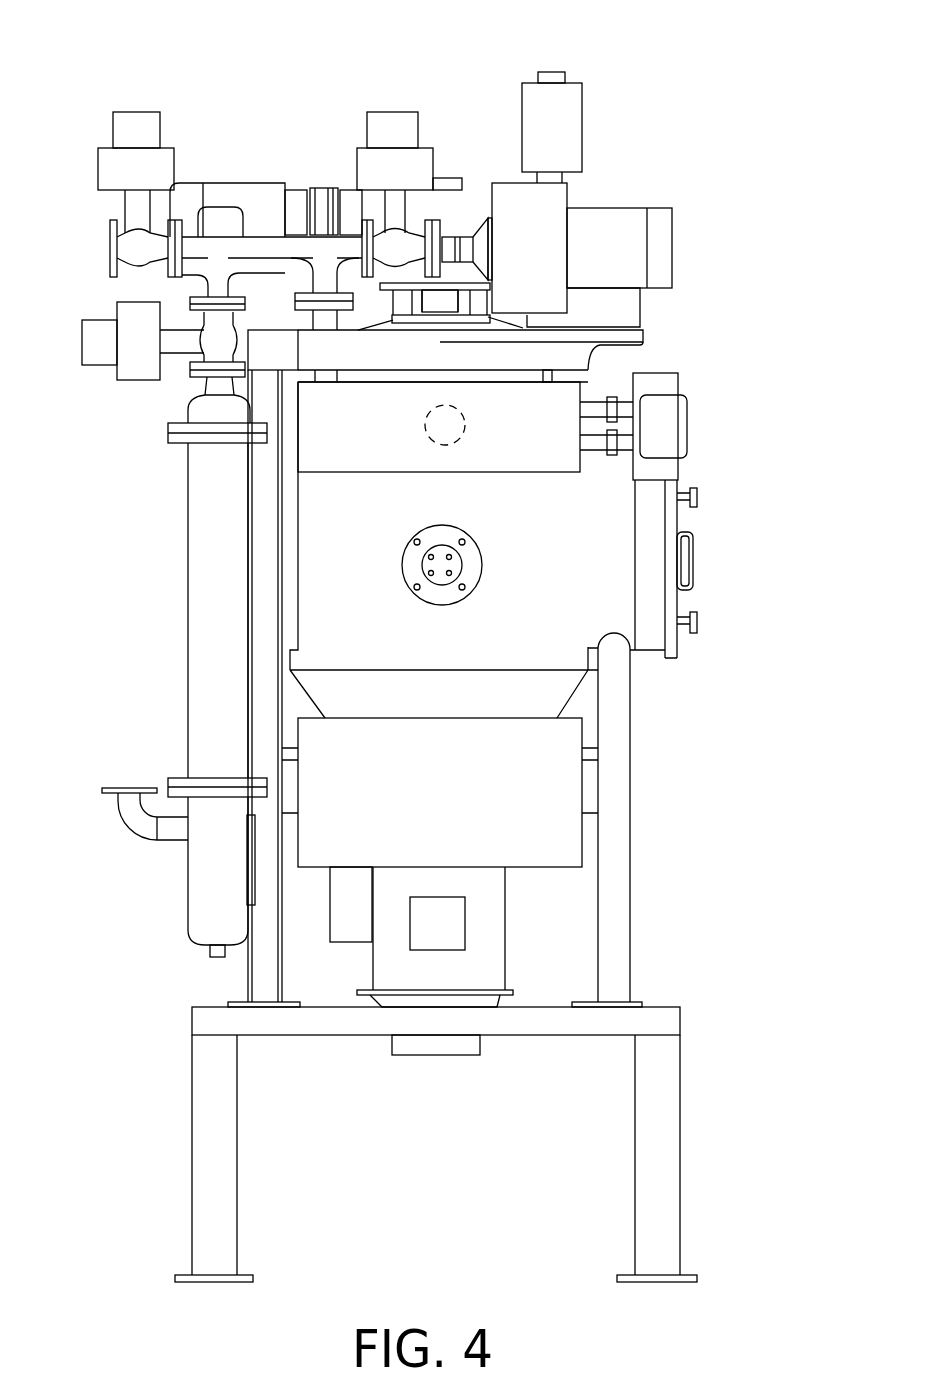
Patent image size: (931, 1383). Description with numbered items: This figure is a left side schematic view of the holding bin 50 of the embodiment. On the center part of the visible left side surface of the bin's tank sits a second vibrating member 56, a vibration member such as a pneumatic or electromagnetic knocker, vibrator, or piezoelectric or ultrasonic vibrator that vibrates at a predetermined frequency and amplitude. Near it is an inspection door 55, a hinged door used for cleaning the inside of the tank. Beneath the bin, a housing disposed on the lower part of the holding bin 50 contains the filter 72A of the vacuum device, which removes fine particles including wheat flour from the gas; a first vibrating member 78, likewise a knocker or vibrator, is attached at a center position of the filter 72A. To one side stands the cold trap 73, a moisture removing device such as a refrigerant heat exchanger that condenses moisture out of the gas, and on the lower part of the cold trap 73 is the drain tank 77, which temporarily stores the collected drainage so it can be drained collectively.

The holding bin 50 is at (397, 641).
The inspection door 55 is at (665, 600).
The second vibrating member 56 is at (463, 588).
The filter 72A is at (540, 472).
The cold trap 73 is at (205, 680).
The drain tank 77 is at (205, 915).
The first vibrating member 78 is at (447, 425).